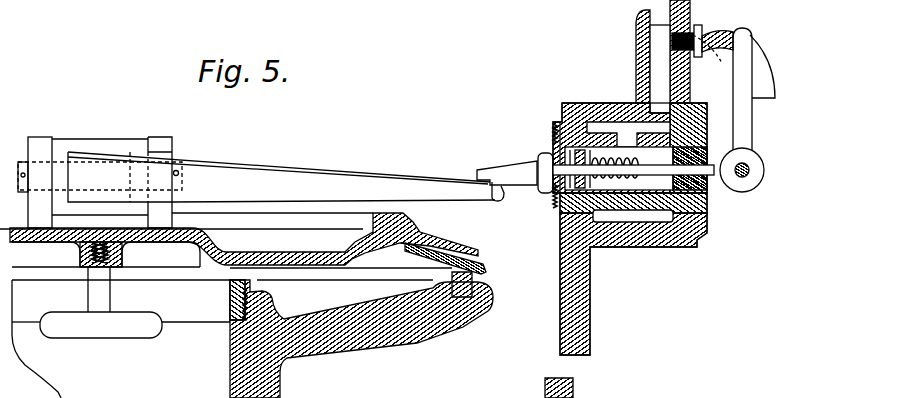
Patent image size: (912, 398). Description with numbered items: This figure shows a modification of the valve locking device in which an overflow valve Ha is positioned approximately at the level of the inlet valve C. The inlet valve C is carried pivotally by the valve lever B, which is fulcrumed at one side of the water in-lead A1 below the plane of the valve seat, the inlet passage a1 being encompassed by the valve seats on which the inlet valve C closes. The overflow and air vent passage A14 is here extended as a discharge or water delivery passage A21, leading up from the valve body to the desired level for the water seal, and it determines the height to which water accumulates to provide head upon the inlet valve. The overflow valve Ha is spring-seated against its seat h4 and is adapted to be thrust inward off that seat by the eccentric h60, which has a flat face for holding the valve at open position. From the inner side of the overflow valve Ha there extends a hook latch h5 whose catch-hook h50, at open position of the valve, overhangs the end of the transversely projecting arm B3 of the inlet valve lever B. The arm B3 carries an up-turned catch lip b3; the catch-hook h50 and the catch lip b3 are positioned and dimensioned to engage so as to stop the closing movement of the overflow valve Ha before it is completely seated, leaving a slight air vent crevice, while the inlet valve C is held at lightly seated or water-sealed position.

The valve lever B is at (100, 151).
The arm B3 is at (382, 193).
The catch-hook h50 is at (477, 175).
The catch lip b3 is at (498, 201).
The hook latch h5 is at (512, 166).
The overflow valve Ha is at (549, 130).
The discharge or water delivery passage A21 is at (655, 62).
The overflow and air vent passage A14 is at (662, 40).
The eccentric h60 is at (742, 192).
The overflow valve seat h4 is at (728, 160).
The inlet valve C is at (203, 246).
The inlet passage a1 is at (121, 332).
The water in-lead A1 is at (238, 379).